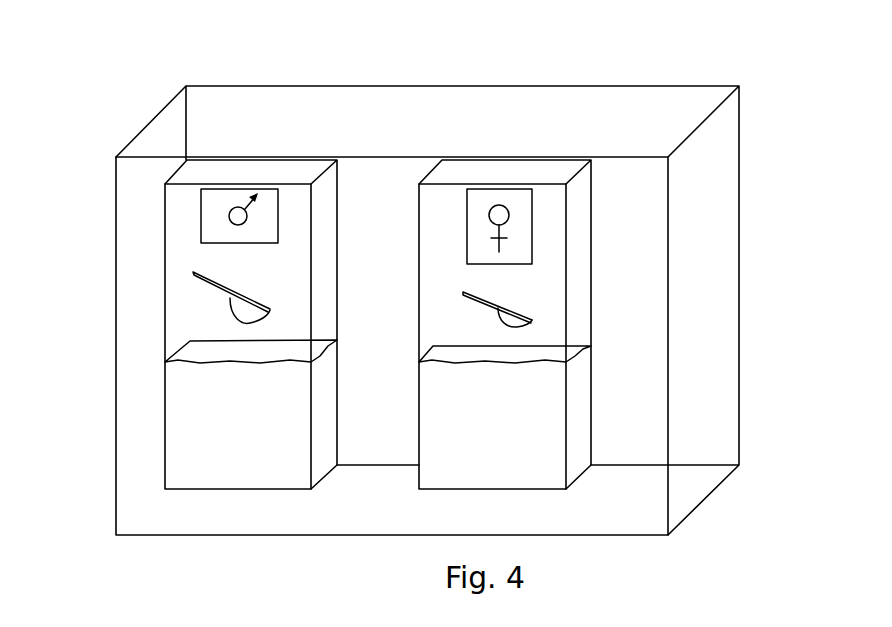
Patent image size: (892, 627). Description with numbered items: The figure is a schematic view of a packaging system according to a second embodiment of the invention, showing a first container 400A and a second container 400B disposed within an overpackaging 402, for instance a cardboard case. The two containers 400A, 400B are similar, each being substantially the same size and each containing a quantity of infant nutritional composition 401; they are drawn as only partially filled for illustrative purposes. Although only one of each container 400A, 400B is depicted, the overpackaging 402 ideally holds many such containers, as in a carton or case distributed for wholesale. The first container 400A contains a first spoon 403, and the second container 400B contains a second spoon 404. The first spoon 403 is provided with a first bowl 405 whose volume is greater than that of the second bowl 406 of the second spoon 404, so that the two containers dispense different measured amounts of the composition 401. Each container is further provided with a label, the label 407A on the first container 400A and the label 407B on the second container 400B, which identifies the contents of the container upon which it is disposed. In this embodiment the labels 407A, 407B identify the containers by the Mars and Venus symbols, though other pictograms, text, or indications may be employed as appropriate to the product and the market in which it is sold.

The first container 400A is at (190, 322).
The second container 400B is at (580, 243).
The infant nutritional composition 401 is at (258, 421).
The overpackaging 402 is at (726, 389).
The first spoon 403 is at (188, 285).
The second spoon 404 is at (506, 288).
The first bowl 405 is at (230, 304).
The second bowl 406 is at (531, 322).
The label 407A is at (222, 203).
The label 407B is at (526, 223).